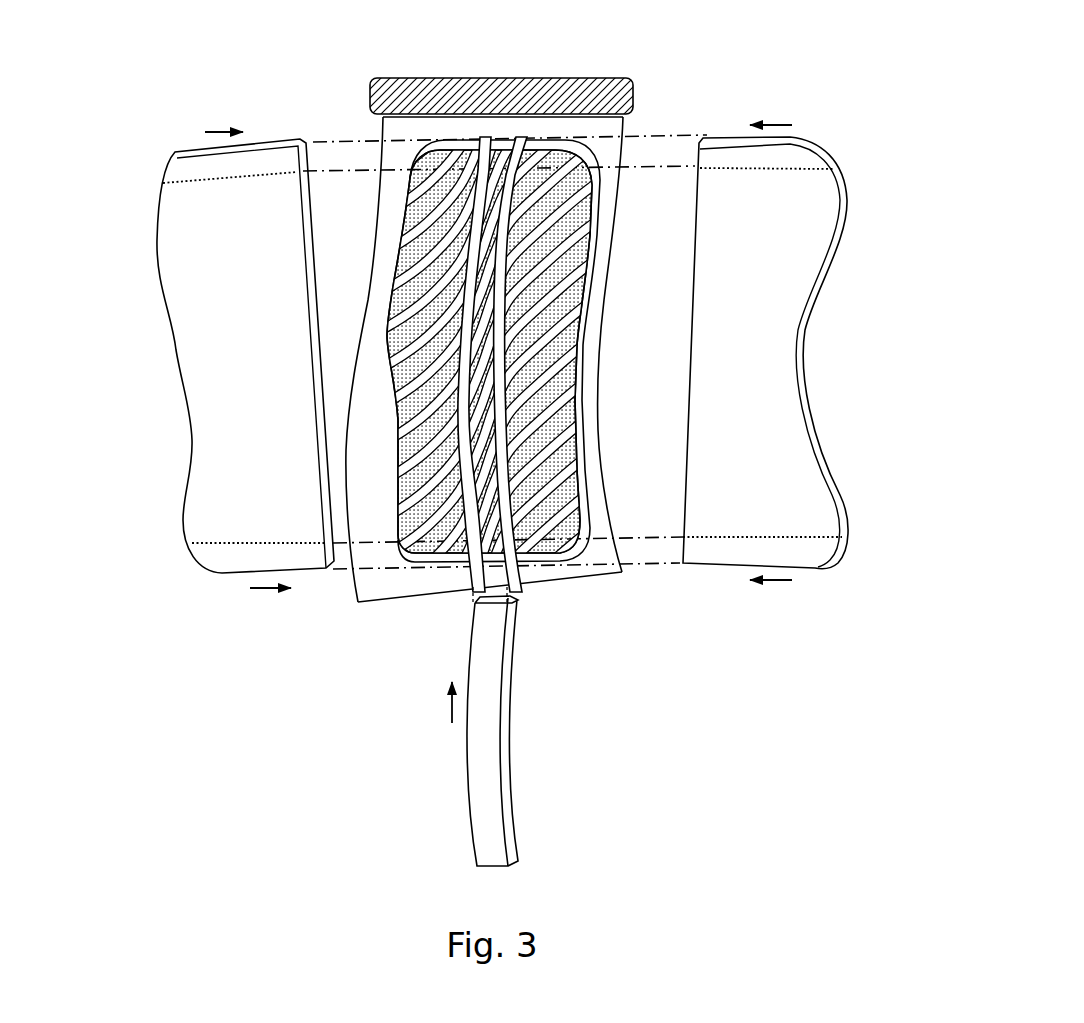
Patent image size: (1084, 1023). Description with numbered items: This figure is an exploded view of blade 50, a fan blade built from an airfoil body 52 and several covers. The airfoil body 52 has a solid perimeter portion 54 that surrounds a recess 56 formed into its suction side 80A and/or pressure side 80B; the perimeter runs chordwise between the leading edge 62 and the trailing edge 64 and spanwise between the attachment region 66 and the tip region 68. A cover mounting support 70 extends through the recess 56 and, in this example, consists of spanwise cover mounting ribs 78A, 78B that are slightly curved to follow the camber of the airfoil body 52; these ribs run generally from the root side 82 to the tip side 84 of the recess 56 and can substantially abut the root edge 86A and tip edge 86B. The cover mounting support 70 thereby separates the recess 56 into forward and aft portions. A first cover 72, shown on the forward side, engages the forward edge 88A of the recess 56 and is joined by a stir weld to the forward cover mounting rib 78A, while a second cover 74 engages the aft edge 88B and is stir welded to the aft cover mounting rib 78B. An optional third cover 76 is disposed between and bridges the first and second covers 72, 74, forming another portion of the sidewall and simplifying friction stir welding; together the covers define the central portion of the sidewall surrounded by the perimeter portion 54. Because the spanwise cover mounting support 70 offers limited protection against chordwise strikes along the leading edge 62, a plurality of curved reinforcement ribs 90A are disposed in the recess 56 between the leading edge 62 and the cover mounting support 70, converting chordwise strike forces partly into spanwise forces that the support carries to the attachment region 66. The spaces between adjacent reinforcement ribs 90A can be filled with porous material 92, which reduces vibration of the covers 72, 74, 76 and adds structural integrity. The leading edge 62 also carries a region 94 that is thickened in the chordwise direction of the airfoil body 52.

The blade 50 is at (799, 74).
The airfoil body 52 is at (626, 226).
The solid perimeter portion 54 is at (366, 290).
The recess 56 is at (424, 225).
The leading edge 62 is at (347, 450).
The trailing edge 64 is at (598, 382).
The attachment region 66 is at (384, 80).
The tip region 68 is at (608, 586).
The cover mounting support 70 is at (500, 130).
The first cover 72 is at (226, 376).
The second cover 74 is at (753, 317).
The third cover 76 is at (526, 745).
The forward cover mounting rib 78A is at (479, 160).
The aft cover mounting rib 78B is at (520, 174).
The suction side 80A is at (598, 285).
The pressure side 80B is at (618, 446).
The root side 82 is at (606, 148).
The tip side 84 is at (382, 560).
The root edge 86A is at (433, 150).
The tip edge 86B is at (546, 555).
The forward edge 88A is at (400, 418).
The aft edge 88B is at (577, 342).
The reinforcement ribs 90A is at (443, 198).
The porous material 92 is at (420, 541).
The thickened region 94 is at (368, 479).